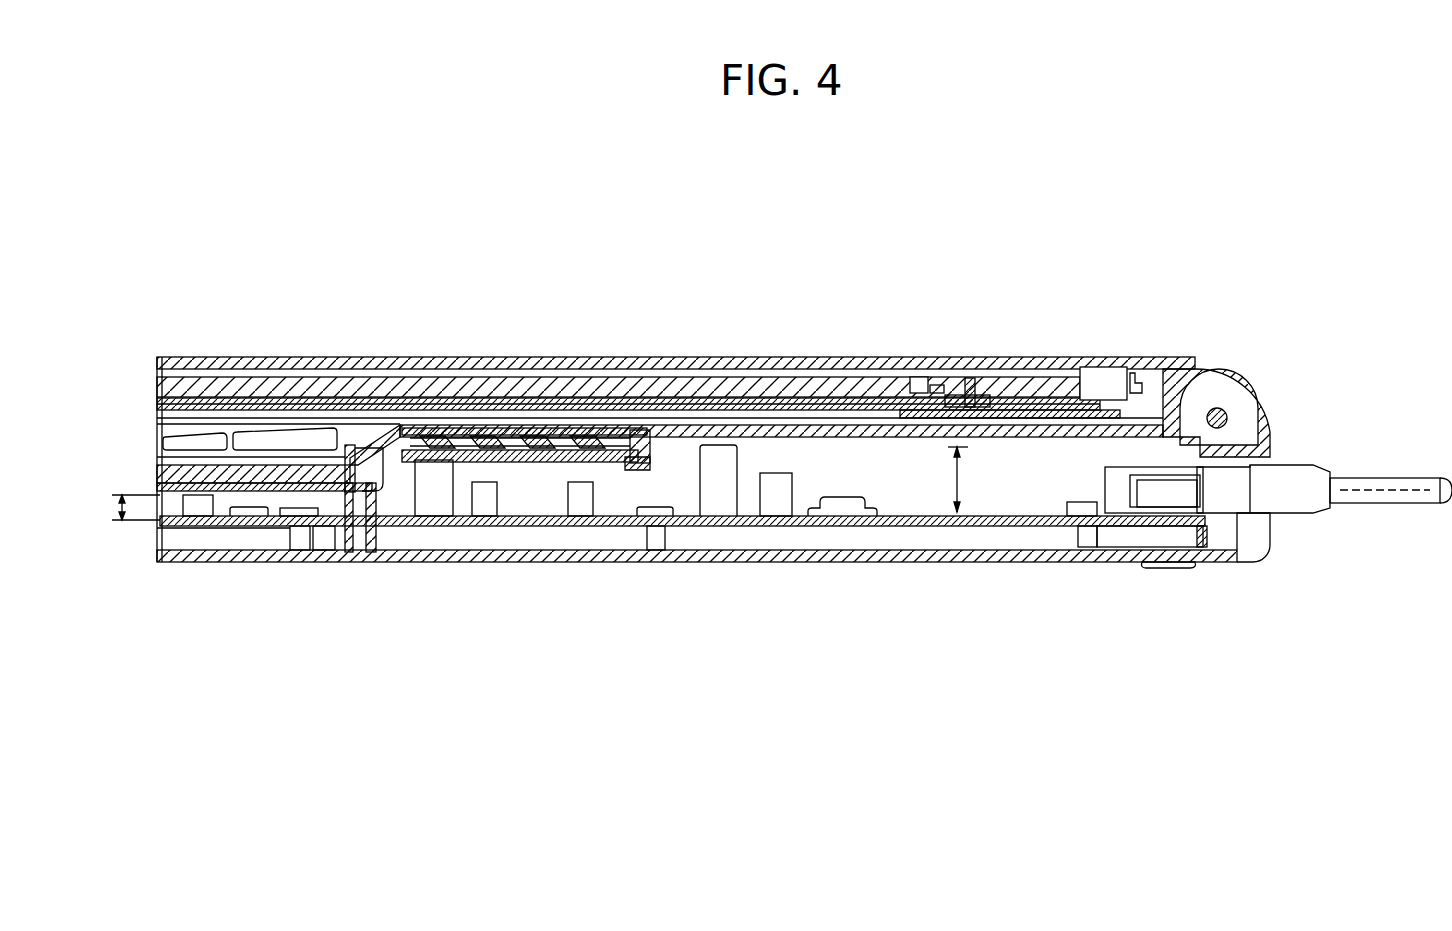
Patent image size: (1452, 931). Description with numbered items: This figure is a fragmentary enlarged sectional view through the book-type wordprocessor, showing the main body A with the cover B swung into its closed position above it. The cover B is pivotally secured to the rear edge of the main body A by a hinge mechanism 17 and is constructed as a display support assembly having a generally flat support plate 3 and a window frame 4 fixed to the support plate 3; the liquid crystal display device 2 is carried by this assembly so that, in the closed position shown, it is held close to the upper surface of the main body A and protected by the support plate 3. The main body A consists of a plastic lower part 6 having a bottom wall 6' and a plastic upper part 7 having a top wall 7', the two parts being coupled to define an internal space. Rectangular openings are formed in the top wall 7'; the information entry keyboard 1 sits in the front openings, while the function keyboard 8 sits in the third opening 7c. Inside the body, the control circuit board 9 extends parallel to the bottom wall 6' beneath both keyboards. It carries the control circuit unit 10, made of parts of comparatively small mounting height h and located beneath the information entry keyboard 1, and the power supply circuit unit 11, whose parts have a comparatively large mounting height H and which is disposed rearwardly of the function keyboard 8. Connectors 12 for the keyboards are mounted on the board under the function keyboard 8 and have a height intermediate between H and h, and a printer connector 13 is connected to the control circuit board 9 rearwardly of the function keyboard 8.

The information entry keyboard 1 is at (272, 430).
The liquid crystal display device 2 is at (343, 394).
The support plate 3 is at (440, 366).
The window frame 4 is at (1093, 396).
The lower part 6 is at (223, 585).
The bottom wall 6' is at (455, 584).
The upper part 7 is at (1324, 402).
The top wall 7' is at (923, 355).
The third opening 7c is at (632, 437).
The function keyboard 8 is at (568, 438).
The control circuit board 9 is at (905, 524).
The control circuit unit 10 is at (182, 510).
The power supply circuit unit 11 is at (718, 508).
The connectors 12 is at (548, 556).
The printer connector 13 is at (1172, 498).
The hinge mechanism 17 is at (1227, 412).
The main body A is at (792, 566).
The cover B is at (787, 356).
The mounting height of power supply circuit unit H is at (967, 479).
The mounting height of control circuit unit h is at (125, 506).